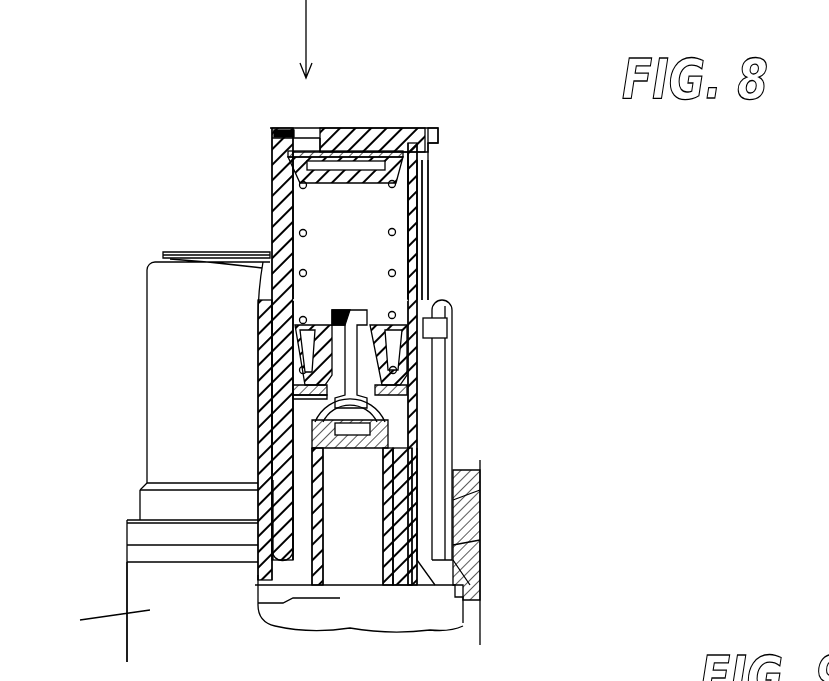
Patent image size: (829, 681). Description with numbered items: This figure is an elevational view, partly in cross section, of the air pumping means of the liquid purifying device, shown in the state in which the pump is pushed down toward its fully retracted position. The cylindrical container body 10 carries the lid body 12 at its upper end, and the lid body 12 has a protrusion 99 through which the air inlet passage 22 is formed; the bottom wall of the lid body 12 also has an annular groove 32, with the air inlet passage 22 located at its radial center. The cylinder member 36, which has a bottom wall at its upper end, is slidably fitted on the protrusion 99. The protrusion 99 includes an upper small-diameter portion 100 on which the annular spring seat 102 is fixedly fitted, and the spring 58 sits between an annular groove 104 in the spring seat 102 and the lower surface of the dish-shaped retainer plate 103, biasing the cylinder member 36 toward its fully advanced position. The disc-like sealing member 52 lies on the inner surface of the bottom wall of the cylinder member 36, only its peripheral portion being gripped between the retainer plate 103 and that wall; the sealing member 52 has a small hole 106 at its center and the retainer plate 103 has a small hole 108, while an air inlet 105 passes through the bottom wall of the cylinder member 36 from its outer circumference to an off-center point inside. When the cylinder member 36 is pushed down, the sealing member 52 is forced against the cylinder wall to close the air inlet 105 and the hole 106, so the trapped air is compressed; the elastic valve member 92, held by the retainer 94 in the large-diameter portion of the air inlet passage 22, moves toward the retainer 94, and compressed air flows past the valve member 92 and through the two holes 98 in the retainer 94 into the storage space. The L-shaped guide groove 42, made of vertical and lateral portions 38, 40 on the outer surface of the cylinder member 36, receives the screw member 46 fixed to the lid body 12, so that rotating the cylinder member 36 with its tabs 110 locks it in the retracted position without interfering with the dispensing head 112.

The container body 10 is at (100, 612).
The lid body 12 is at (167, 457).
The air inlet passage 22 is at (350, 312).
The annular groove 32 is at (290, 556).
The cylinder member 36 is at (432, 167).
The vertical portion of guide groove 38 is at (426, 218).
The lateral portion of guide groove 40 is at (424, 194).
The L-shaped guide groove 42 is at (510, 153).
The screw member 46 is at (433, 330).
The sealing member 52 is at (390, 150).
The spring 58 is at (300, 234).
The valve member 92 is at (295, 406).
The retainer 94 is at (392, 582).
The holes 98 is at (338, 448).
The protrusion 99 is at (414, 440).
The upper small-diameter portion 100 is at (300, 356).
The annular spring seat 102 is at (300, 386).
The retainer plate 103 is at (292, 170).
The annular groove 104 is at (294, 334).
The air inlet 105 is at (296, 140).
The small hole 106 is at (348, 128).
The small hole 108 is at (347, 186).
The tabs 110 is at (433, 128).
The dispensing head 112 is at (180, 252).